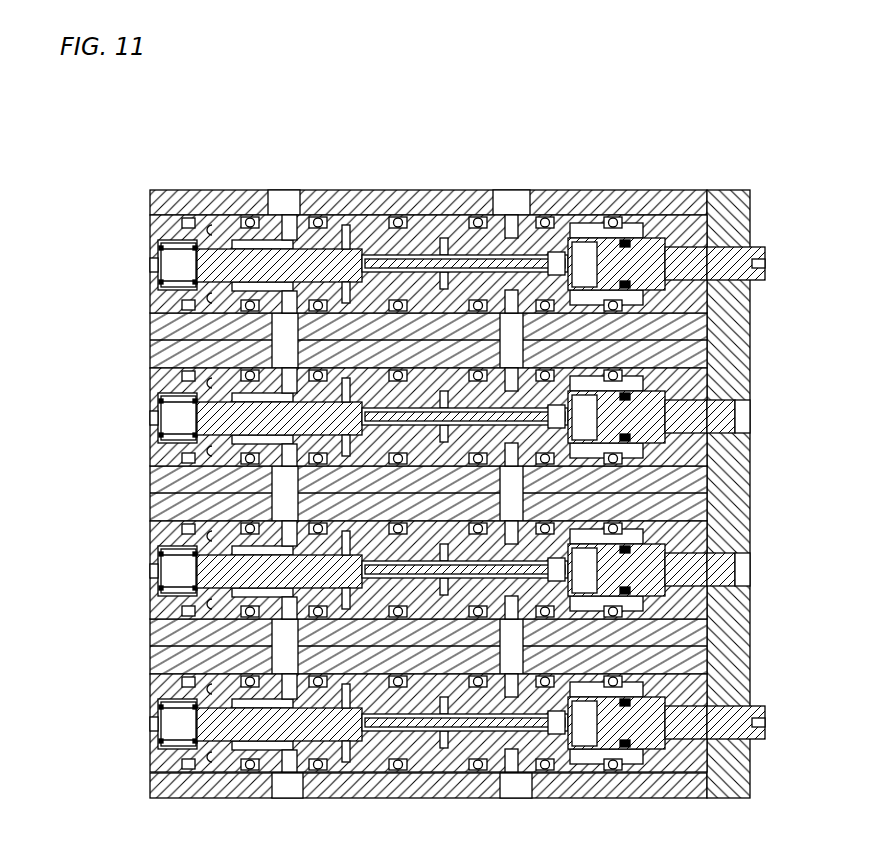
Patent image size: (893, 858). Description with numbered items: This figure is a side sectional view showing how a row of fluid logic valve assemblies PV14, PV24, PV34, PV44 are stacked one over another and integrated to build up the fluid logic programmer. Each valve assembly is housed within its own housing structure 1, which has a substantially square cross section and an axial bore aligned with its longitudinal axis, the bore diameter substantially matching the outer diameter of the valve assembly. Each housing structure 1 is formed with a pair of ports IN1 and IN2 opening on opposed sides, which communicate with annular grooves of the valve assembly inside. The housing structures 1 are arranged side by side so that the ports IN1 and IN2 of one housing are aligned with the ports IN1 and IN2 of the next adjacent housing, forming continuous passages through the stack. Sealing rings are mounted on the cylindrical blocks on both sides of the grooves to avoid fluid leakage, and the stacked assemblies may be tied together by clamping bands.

The housing structure 1 is at (690, 352).
The port IN1 is at (515, 203).
The port IN2 is at (287, 203).
The fluid logic valve assembly PV14 is at (150, 264).
The fluid logic valve assembly PV24 is at (150, 420).
The fluid logic valve assembly PV34 is at (150, 568).
The fluid logic valve assembly PV44 is at (150, 725).